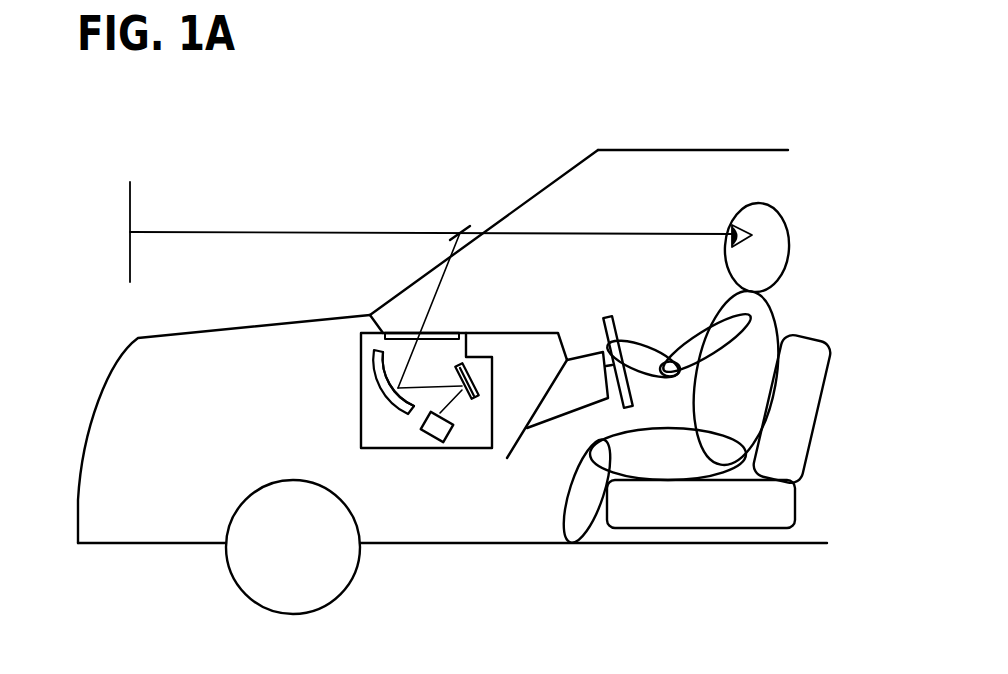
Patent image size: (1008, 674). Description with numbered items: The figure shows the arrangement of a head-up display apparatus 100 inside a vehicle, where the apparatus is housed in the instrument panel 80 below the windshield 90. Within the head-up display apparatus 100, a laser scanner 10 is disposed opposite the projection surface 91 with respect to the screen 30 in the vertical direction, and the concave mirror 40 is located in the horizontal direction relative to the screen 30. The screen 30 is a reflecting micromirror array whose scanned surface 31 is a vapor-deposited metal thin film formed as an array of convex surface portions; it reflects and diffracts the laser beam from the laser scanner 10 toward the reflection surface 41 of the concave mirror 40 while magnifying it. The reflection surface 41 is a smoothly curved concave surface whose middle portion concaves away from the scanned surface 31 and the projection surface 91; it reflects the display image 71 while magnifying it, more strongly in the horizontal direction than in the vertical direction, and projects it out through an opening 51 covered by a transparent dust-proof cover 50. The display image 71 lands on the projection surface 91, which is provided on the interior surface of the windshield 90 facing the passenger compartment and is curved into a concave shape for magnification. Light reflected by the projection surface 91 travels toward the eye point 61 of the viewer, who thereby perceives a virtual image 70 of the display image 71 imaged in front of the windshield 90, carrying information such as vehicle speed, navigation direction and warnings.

The laser scanner 10 is at (426, 434).
The head-up display apparatus 100 is at (463, 450).
The screen 30 is at (478, 371).
The scanned surface 31 is at (469, 398).
The concave mirror 40 is at (378, 359).
The reflection surface 41 is at (376, 349).
The transparent dust-proof cover 50 is at (405, 332).
The opening 51 is at (455, 332).
The eye point 61 is at (732, 229).
The virtual image 70 is at (130, 184).
The display image 71 is at (458, 380).
The instrument panel 80 is at (525, 332).
The windshield 90 is at (522, 192).
The projection surface 91 is at (468, 230).